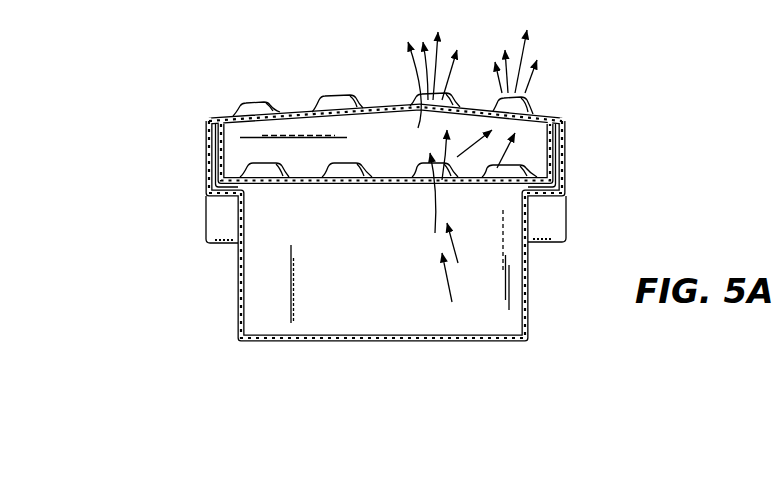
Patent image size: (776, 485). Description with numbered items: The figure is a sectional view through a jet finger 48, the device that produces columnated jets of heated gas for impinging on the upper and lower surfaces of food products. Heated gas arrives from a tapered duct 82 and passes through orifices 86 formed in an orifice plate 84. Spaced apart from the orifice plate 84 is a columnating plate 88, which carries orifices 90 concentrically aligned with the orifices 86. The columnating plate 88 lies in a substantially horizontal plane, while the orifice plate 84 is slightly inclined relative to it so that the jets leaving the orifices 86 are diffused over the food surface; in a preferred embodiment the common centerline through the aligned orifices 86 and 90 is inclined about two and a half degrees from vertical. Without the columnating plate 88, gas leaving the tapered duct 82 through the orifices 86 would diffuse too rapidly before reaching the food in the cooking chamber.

The jet finger 48 is at (342, 184).
The tapered duct 82 is at (528, 303).
The orifice plate 84 is at (385, 86).
The orifice 86 is at (332, 96).
The columnating plate 88 is at (340, 181).
The orifice 90 is at (386, 176).